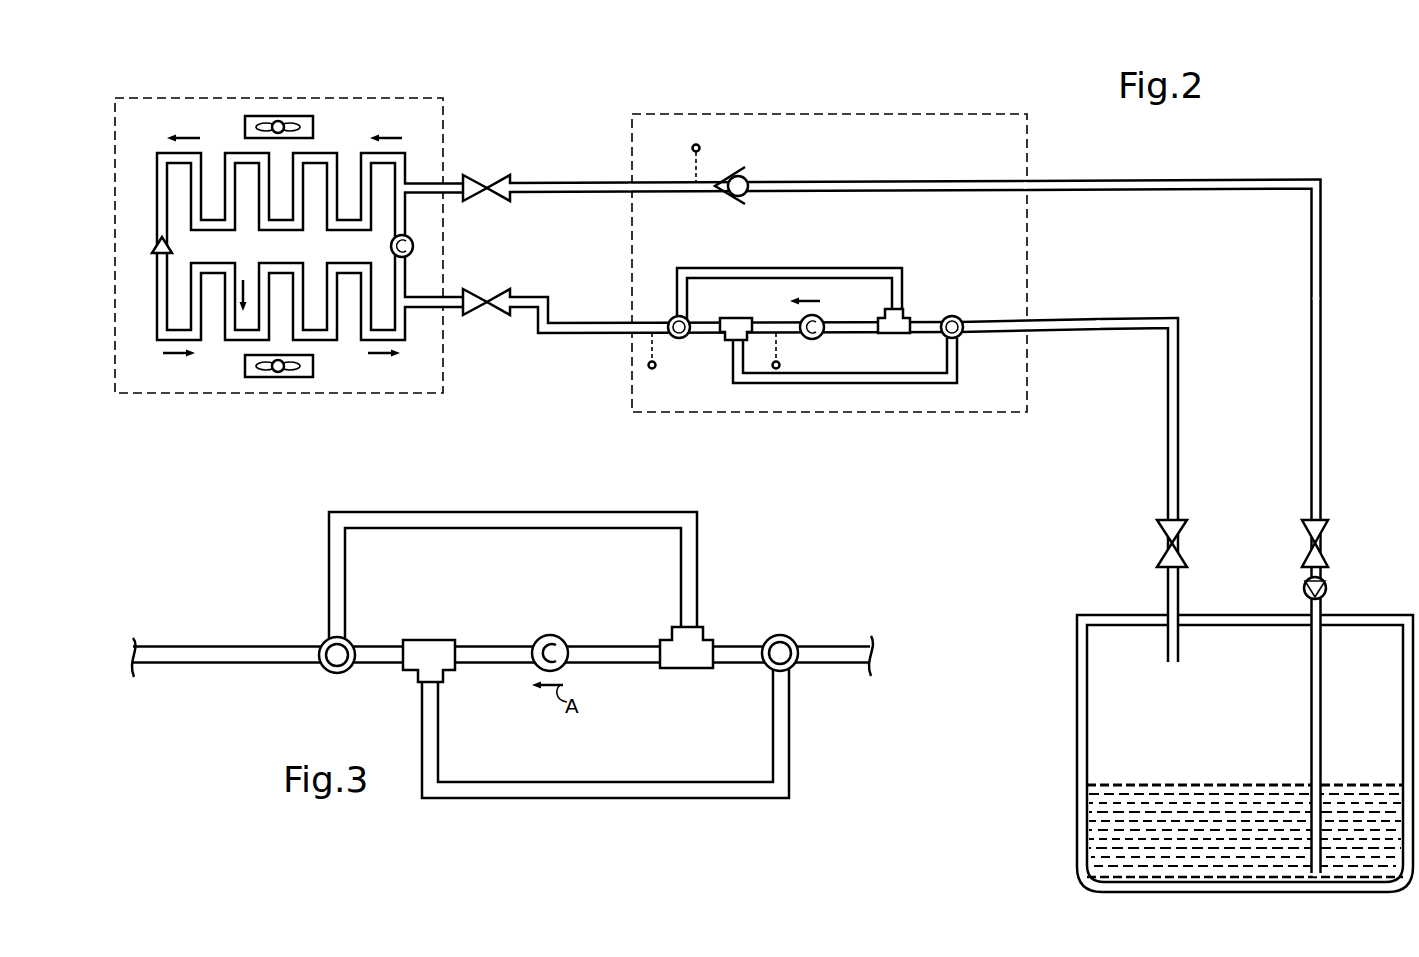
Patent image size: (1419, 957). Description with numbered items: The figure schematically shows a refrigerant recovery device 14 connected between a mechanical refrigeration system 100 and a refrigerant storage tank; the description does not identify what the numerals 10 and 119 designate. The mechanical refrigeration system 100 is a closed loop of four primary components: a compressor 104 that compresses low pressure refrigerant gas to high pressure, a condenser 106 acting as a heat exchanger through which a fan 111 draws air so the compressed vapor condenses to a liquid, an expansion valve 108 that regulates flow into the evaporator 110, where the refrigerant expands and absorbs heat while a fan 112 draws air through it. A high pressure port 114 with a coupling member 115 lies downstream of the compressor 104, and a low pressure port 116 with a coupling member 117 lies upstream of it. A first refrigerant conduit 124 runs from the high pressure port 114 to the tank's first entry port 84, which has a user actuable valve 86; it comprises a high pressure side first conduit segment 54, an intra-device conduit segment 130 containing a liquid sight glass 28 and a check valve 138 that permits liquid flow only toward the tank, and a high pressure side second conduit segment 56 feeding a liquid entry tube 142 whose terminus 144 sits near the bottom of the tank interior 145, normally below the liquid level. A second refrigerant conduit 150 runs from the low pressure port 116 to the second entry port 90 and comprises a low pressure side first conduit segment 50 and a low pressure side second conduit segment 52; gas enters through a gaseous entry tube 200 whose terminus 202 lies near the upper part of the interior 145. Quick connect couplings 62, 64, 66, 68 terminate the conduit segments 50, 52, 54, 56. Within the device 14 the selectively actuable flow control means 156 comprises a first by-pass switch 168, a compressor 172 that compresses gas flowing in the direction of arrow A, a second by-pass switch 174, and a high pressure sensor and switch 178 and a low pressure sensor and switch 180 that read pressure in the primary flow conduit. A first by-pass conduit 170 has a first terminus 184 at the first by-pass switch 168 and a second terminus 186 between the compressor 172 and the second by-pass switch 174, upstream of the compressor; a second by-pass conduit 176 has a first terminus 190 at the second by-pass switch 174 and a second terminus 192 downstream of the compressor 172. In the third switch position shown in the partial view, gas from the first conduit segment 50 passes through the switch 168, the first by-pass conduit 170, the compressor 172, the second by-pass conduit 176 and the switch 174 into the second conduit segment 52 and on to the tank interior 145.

In FIG. 2, the flushing system 10 is at (672, 82).
In FIG. 2, the refrigerant recovery device 14 is at (830, 105).
In FIG. 2, the liquid sight glass 28 is at (696, 144).
In FIG. 2, the low pressure side first conduit segment 50 is at (610, 334).
In FIG. 2, the low pressure side second conduit segment 52 is at (1167, 425).
In FIG. 2, the high pressure side first conduit segment 54 is at (580, 183).
In FIG. 2, the high pressure side second conduit segment 56 is at (1310, 330).
In FIG. 2, the quick connect coupling 62 is at (500, 310).
In FIG. 2, the quick connect coupling 64 is at (503, 175).
In FIG. 2, the quick connect coupling 66 is at (1327, 530).
In FIG. 2, the quick connect coupling 68 is at (1185, 527).
In FIG. 2, the first entry port 84 is at (1347, 552).
In FIG. 2, the user actuable valve 86 is at (1327, 592).
In FIG. 2, the second entry port 90 is at (1152, 588).
In FIG. 2, the mechanical refrigeration system 100 is at (155, 96).
In FIG. 2, the compressor 104 is at (384, 247).
In FIG. 2, the condenser 106 is at (334, 146).
In FIG. 2, the expansion valve 108 is at (173, 246).
In FIG. 2, the evaporator 110 is at (230, 346).
In FIG. 2, the fan 111 is at (283, 116).
In FIG. 2, the fan 112 is at (282, 378).
In FIG. 2, the high pressure port 114 is at (456, 182).
In FIG. 2, the coupling member 115 is at (472, 202).
In FIG. 2, the low pressure port 116 is at (452, 310).
In FIG. 2, the coupling member 117 is at (472, 288).
In FIG. 2, the valve stem 119 is at (1304, 560).
In FIG. 2, the first refrigerant conduit 124 is at (1098, 180).
In FIG. 2, the intra-device conduit segment 130 is at (840, 181).
In FIG. 2, the check valve 138 is at (748, 179).
In FIG. 2, the liquid entry tube 142 is at (1322, 673).
In FIG. 2, the terminus 144 is at (1302, 872).
In FIG. 2, the interior 145 is at (1223, 755).
In FIG. 2, the second refrigerant conduit 150 is at (986, 418).
In FIG. 2, the selectively actuable flow control means 156 is at (791, 250).
In FIG. 2, the first by-pass switch 168 is at (675, 316).
In FIG. 3, the first by-pass switch 168 is at (337, 673).
In FIG. 2, the first by-pass conduit 170 is at (715, 268).
In FIG. 3, the first by-pass conduit 170 is at (490, 512).
In FIG. 2, the compressor 172 is at (812, 340).
In FIG. 2, the second by-pass switch 174 is at (955, 315).
In FIG. 3, the second by-pass switch 174 is at (780, 635).
In FIG. 2, the second by-pass conduit 176 is at (843, 383).
In FIG. 3, the second by-pass conduit 176 is at (543, 798).
In FIG. 2, the high pressure sensor and switch 178 is at (776, 369).
In FIG. 2, the low pressure sensor and switch 180 is at (652, 369).
In FIG. 2, the first terminus 184 is at (686, 314).
In FIG. 3, the first terminus 184 is at (328, 638).
In FIG. 2, the second terminus 186 is at (907, 313).
In FIG. 3, the second terminus 186 is at (707, 640).
In FIG. 2, the first terminus 190 is at (958, 337).
In FIG. 3, the first terminus 190 is at (793, 670).
In FIG. 2, the second terminus 192 is at (727, 341).
In FIG. 3, the second terminus 192 is at (433, 640).
In FIG. 2, the gaseous entry tube 200 is at (1178, 643).
In FIG. 2, the terminus 202 is at (1173, 662).